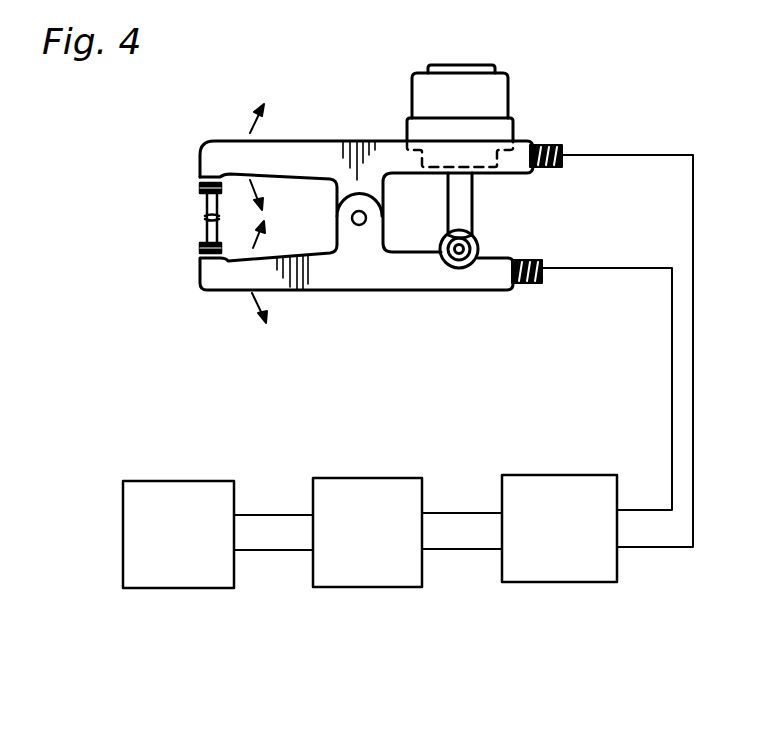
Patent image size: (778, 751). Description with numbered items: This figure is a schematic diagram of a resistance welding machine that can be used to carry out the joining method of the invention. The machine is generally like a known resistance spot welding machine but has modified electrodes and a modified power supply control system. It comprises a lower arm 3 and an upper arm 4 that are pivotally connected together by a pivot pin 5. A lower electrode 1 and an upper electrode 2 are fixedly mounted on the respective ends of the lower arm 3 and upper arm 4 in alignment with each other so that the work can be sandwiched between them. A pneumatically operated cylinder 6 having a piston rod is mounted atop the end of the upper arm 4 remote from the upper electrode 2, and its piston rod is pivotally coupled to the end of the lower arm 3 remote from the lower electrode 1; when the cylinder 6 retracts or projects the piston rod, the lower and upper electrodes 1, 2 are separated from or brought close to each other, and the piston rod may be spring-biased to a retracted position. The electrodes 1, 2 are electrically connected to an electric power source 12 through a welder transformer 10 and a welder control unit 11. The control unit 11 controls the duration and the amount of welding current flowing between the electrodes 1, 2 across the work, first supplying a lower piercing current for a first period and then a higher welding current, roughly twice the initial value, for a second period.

The lower electrode 1 is at (203, 229).
The upper electrode 2 is at (203, 205).
The lower arm 3 is at (405, 277).
The upper arm 4 is at (318, 141).
The pivot pin 5 is at (366, 218).
The pneumatically operated cylinder 6 is at (508, 88).
The welder transformer 10 is at (565, 583).
The welder control unit 11 is at (375, 588).
The electric power source 12 is at (182, 590).